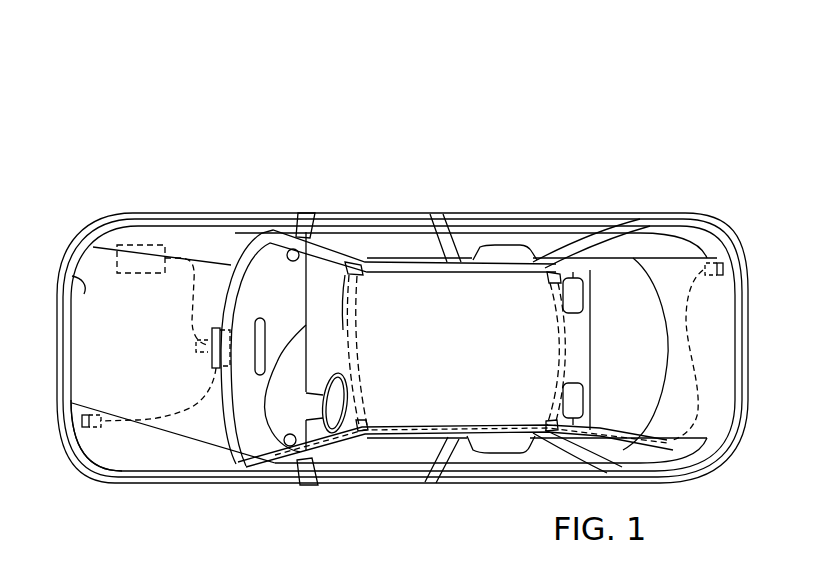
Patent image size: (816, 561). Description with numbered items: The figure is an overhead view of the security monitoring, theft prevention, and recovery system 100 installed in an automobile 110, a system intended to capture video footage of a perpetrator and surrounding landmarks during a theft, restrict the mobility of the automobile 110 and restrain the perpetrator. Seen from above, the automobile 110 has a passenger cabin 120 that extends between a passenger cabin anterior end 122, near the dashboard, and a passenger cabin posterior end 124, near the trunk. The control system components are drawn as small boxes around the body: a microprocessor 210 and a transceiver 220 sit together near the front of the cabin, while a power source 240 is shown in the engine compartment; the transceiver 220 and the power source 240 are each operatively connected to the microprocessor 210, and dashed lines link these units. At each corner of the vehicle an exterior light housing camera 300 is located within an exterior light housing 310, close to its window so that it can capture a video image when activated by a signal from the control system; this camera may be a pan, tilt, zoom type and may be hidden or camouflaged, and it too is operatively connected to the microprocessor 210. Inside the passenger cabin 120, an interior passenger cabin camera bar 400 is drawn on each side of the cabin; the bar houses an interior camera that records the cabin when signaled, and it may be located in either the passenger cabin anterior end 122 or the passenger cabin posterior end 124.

The security monitoring, theft prevention, and recovery system 100 is at (114, 87).
The automobile 110 is at (414, 481).
The passenger cabin 120 is at (412, 247).
The passenger cabin anterior end 122 is at (281, 313).
The passenger cabin posterior end 124 is at (620, 300).
The microprocessor 210 is at (210, 360).
The transceiver 220 is at (205, 346).
The power source 240 is at (126, 250).
The exterior light housing camera 300 is at (88, 425).
The exterior light housing 310 is at (88, 444).
The interior passenger cabin camera bar 400 is at (361, 263).